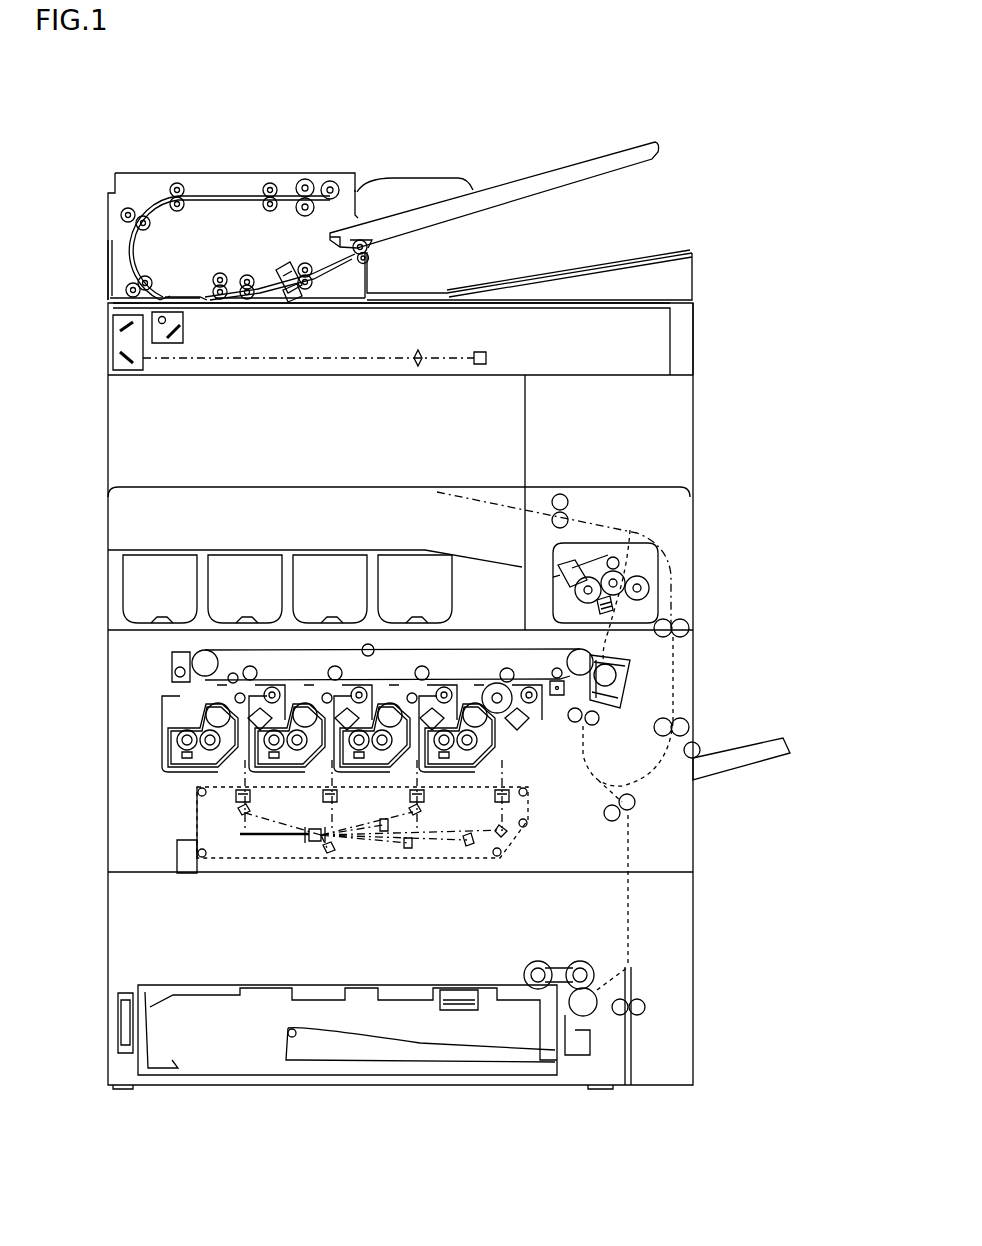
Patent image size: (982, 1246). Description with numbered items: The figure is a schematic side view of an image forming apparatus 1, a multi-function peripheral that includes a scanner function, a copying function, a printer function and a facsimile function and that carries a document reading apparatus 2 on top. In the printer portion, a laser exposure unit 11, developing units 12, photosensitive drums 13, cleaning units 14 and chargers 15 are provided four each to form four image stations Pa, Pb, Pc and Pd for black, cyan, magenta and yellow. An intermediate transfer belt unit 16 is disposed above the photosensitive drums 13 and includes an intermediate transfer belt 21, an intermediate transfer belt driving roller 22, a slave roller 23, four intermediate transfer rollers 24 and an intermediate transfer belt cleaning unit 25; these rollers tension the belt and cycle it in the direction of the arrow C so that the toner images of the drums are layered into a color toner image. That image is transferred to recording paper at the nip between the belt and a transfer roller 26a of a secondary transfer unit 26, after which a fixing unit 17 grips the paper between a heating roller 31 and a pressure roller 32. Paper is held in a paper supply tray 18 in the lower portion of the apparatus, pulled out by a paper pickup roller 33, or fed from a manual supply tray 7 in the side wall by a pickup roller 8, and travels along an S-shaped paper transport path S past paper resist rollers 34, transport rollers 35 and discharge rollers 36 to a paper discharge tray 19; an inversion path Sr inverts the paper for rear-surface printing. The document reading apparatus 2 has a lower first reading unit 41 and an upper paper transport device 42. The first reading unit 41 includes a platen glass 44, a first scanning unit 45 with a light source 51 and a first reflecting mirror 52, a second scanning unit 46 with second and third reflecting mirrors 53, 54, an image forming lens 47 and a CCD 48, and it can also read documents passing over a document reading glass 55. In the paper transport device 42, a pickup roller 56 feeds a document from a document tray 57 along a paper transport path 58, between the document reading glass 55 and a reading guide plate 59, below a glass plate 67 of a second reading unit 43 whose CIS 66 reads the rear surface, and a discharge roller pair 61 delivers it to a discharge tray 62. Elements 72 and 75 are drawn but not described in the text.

The image forming apparatus 1 is at (100, 765).
The document reading apparatus 2 is at (765, 222).
The manual supply tray 7 is at (765, 760).
The pickup roller 8 is at (700, 748).
The laser exposure unit 11 is at (532, 828).
The developing units 12 is at (372, 821).
The photosensitive drums 13 is at (481, 690).
The cleaning units 14 is at (556, 679).
The chargers 15 is at (505, 792).
The intermediate transfer belt unit 16 is at (455, 640).
The fixing unit 17 is at (668, 568).
The paper supply tray 18 is at (118, 1025).
The paper discharge tray 19 is at (222, 548).
The intermediate transfer belt 21 is at (455, 650).
The intermediate transfer belt driving roller 22 is at (672, 638).
The slave roller 23 is at (210, 648).
The intermediate transfer rollers 24 is at (335, 665).
The intermediate transfer belt cleaning unit 25 is at (170, 667).
The secondary transfer unit 26 is at (625, 700).
The transfer roller 26a is at (628, 672).
The heating roller 31 is at (612, 570).
The pressure roller 32 is at (650, 592).
The paper pickup roller 33 is at (540, 958).
The paper resist rollers 34 is at (595, 723).
The transport rollers 35 is at (636, 802).
The discharge rollers 36 is at (561, 493).
The first reading unit 41 is at (697, 334).
The paper transport device 42 is at (612, 251).
The second reading unit 43 is at (258, 281).
The platen glass 44 is at (545, 310).
The first scanning unit 45 is at (170, 345).
The second scanning unit 46 is at (128, 372).
The image forming lens 47 is at (418, 364).
The charge coupled device (CCD) 48 is at (480, 366).
The light source 51 is at (168, 322).
The first reflecting mirror 52 is at (180, 334).
The second reflecting mirror 53 is at (120, 327).
The third reflecting mirror 54 is at (120, 357).
The document reading glass 55 is at (170, 296).
The pickup roller 56 is at (331, 181).
The document tray 57 is at (518, 178).
The paper transport path 58 is at (125, 217).
The reading guide plate 59 is at (177, 296).
The discharge roller pair 61 is at (372, 256).
The discharge tray 62 is at (515, 281).
The contact image sensor (CIS) 66 is at (290, 268).
The glass plate 67 is at (290, 300).
The feed rollers 72 is at (270, 183).
The housing wall 75 is at (122, 258).
The image station Pa is at (485, 651).
The image station Pb is at (388, 666).
The image station Pc is at (305, 666).
The image station Pd is at (165, 750).
The arrow C is at (560, 638).
The paper transport path S is at (587, 763).
The inversion path Sr is at (678, 641).